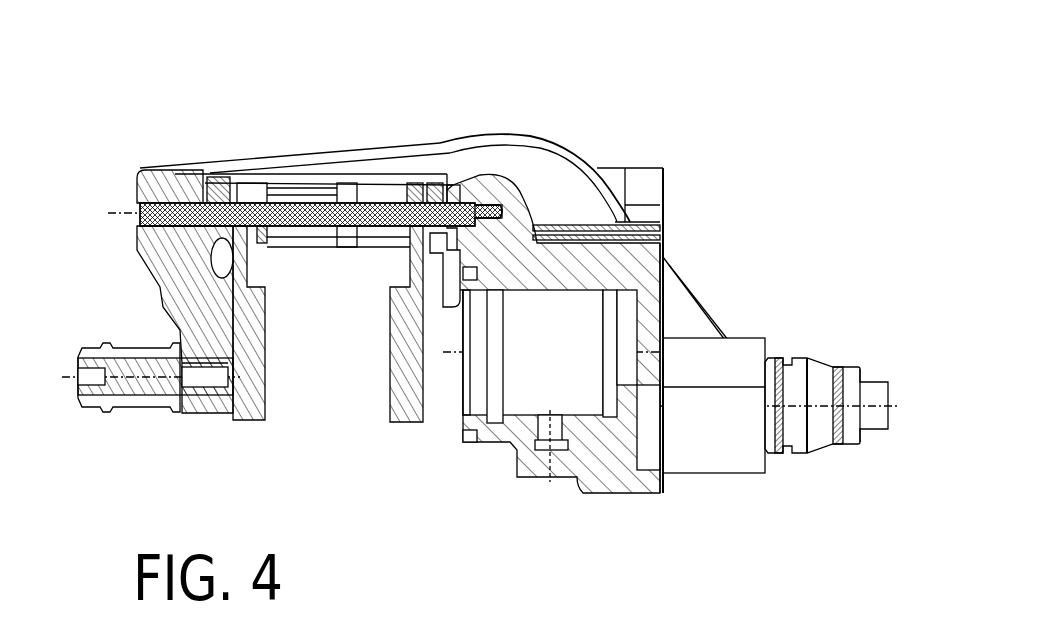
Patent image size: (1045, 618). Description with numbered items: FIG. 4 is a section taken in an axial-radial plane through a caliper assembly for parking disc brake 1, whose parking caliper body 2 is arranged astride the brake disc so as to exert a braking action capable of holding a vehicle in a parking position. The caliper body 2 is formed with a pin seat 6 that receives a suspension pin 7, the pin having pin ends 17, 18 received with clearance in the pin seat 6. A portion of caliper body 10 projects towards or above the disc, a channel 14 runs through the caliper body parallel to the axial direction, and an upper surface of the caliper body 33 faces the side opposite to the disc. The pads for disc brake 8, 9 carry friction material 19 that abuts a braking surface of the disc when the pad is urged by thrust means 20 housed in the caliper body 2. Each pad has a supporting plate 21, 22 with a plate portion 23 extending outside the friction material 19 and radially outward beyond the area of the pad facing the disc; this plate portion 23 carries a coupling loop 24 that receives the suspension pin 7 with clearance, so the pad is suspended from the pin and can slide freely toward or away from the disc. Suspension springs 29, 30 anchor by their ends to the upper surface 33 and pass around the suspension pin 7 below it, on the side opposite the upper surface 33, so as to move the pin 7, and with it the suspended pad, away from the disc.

The caliper assembly for parking disc brake 1 is at (714, 173).
The parking caliper body 2 is at (664, 262).
The pin seat 6 is at (172, 176).
The suspension pin 7 is at (327, 212).
The pad for disc brake 8 is at (410, 388).
The pad for disc brake 9 is at (248, 420).
The portion of caliper body 10 is at (473, 190).
The channel 14 is at (361, 160).
The pin end 17 is at (545, 205).
The pin end 18 is at (207, 195).
The friction material 19 is at (393, 337).
The thrust means 20 is at (529, 381).
The supporting plate 21 is at (421, 203).
The supporting plate 22 is at (240, 262).
The plate portion 23 is at (412, 252).
The coupling loop 24 is at (393, 197).
The suspension spring 29 is at (478, 202).
The suspension spring 30 is at (229, 195).
The upper surface of the caliper body 33 is at (485, 200).